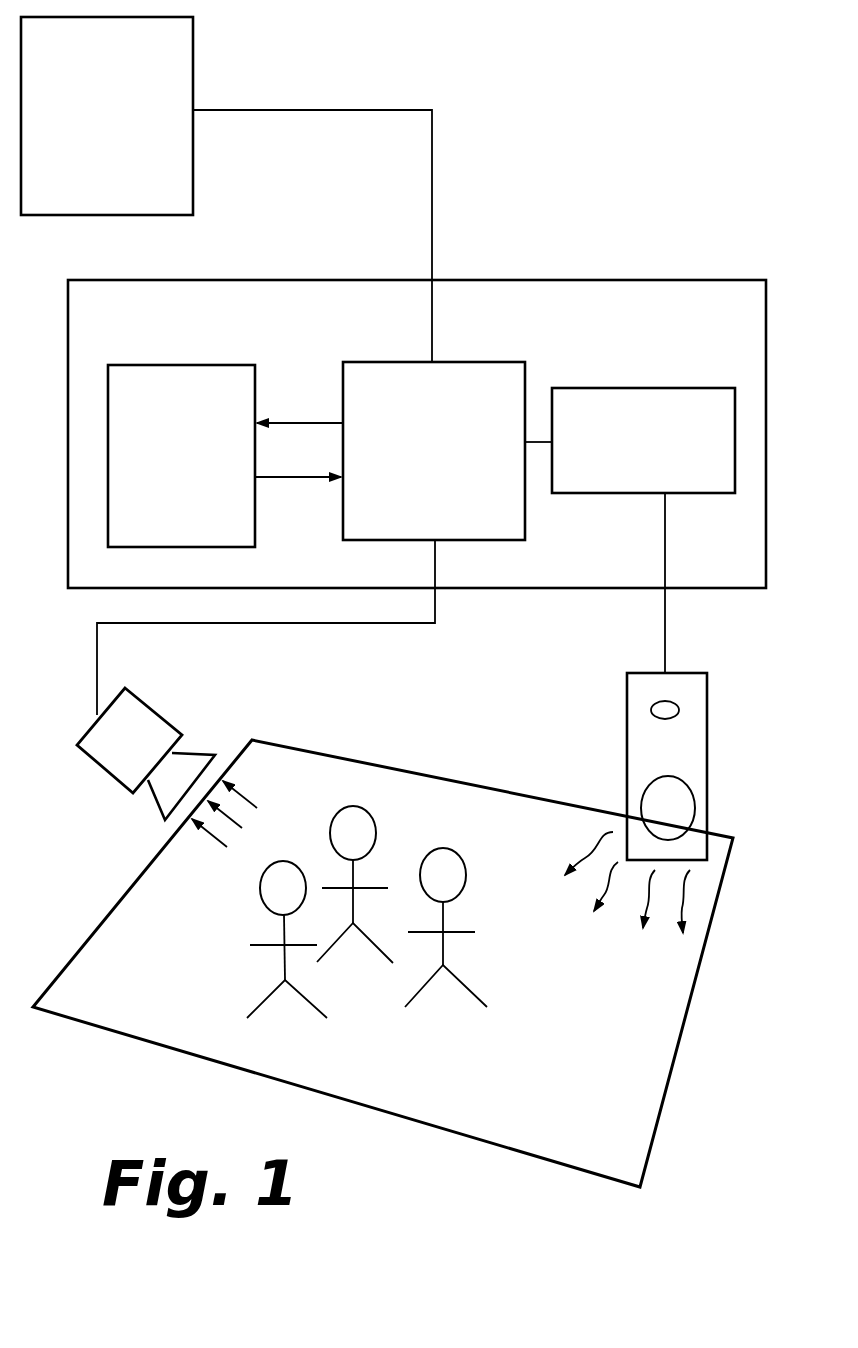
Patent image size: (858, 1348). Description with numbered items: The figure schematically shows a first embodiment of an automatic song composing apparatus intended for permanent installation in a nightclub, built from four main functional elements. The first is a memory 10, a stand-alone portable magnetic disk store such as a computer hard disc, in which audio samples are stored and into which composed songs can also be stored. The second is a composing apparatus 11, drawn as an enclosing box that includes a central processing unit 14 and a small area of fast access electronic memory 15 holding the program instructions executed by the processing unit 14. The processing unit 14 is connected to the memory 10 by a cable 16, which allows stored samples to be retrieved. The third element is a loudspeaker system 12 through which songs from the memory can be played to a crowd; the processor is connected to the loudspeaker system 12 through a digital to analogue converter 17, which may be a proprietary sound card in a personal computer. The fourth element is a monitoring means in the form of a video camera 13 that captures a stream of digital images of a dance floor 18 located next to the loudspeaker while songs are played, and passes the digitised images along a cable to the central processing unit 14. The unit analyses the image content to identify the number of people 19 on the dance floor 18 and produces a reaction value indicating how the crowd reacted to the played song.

The memory 10 is at (96, 164).
The composing apparatus 11 is at (567, 280).
The loudspeaker system 12 is at (627, 732).
The video camera 13 is at (157, 710).
The central processing unit 14 is at (422, 526).
The fast access electronic memory 15 is at (170, 526).
The cable 16 is at (432, 158).
The digital to analogue converter 17 is at (607, 493).
The dance floor 18 is at (353, 760).
The people 19 is at (280, 960).